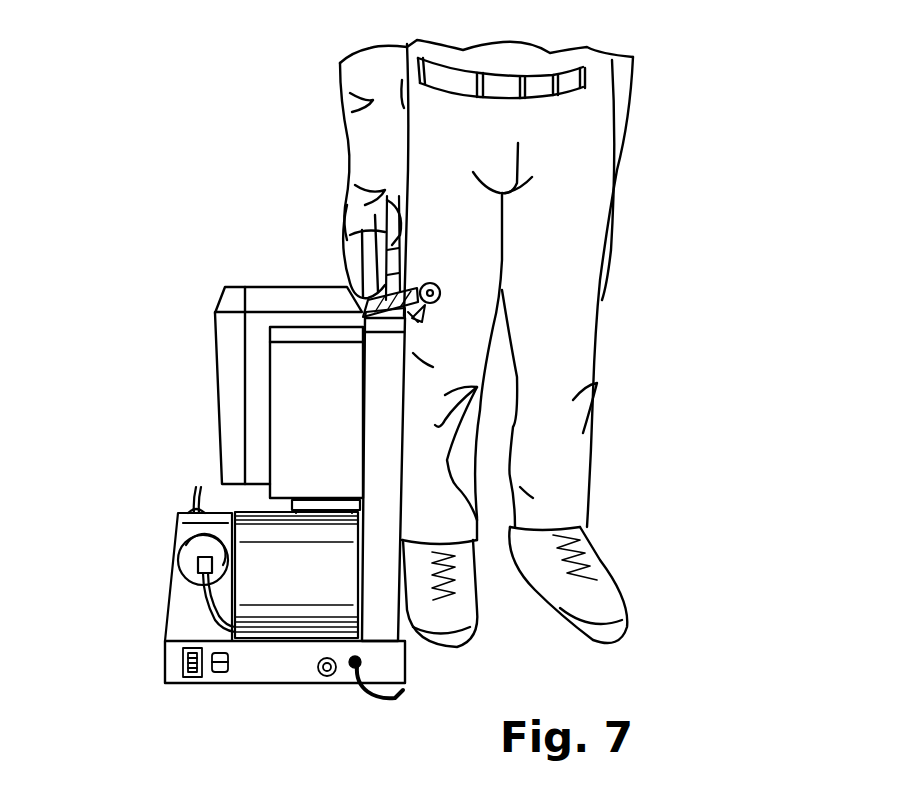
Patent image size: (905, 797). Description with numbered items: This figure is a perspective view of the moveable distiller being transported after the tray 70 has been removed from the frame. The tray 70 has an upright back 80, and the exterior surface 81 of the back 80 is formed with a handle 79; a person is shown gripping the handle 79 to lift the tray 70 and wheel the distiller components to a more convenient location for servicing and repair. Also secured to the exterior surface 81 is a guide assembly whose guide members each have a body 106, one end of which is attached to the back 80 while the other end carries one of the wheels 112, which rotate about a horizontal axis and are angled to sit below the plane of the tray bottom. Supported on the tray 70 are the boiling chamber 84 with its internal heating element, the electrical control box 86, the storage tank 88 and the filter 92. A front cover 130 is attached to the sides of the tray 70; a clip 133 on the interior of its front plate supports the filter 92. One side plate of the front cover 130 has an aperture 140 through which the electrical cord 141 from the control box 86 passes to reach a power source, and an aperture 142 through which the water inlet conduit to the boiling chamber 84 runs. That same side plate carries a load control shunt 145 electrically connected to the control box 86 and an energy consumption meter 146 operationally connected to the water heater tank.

The tray 70 is at (380, 593).
The handle 79 is at (350, 232).
The back 80 is at (358, 300).
The exterior surface 81 is at (360, 307).
The boiling chamber 84 is at (272, 590).
The electrical control box 86 is at (325, 425).
The storage tank 88 is at (228, 348).
The filter 92 is at (190, 560).
The body 106 is at (423, 317).
The wheels 112 is at (437, 283).
The front cover 130 is at (262, 668).
The clip 133 is at (195, 514).
The aperture 140 is at (352, 667).
The electrical cord 141 is at (378, 695).
The aperture 142 is at (327, 667).
The load control shunt 145 is at (222, 672).
The energy consumption meter 146 is at (185, 675).